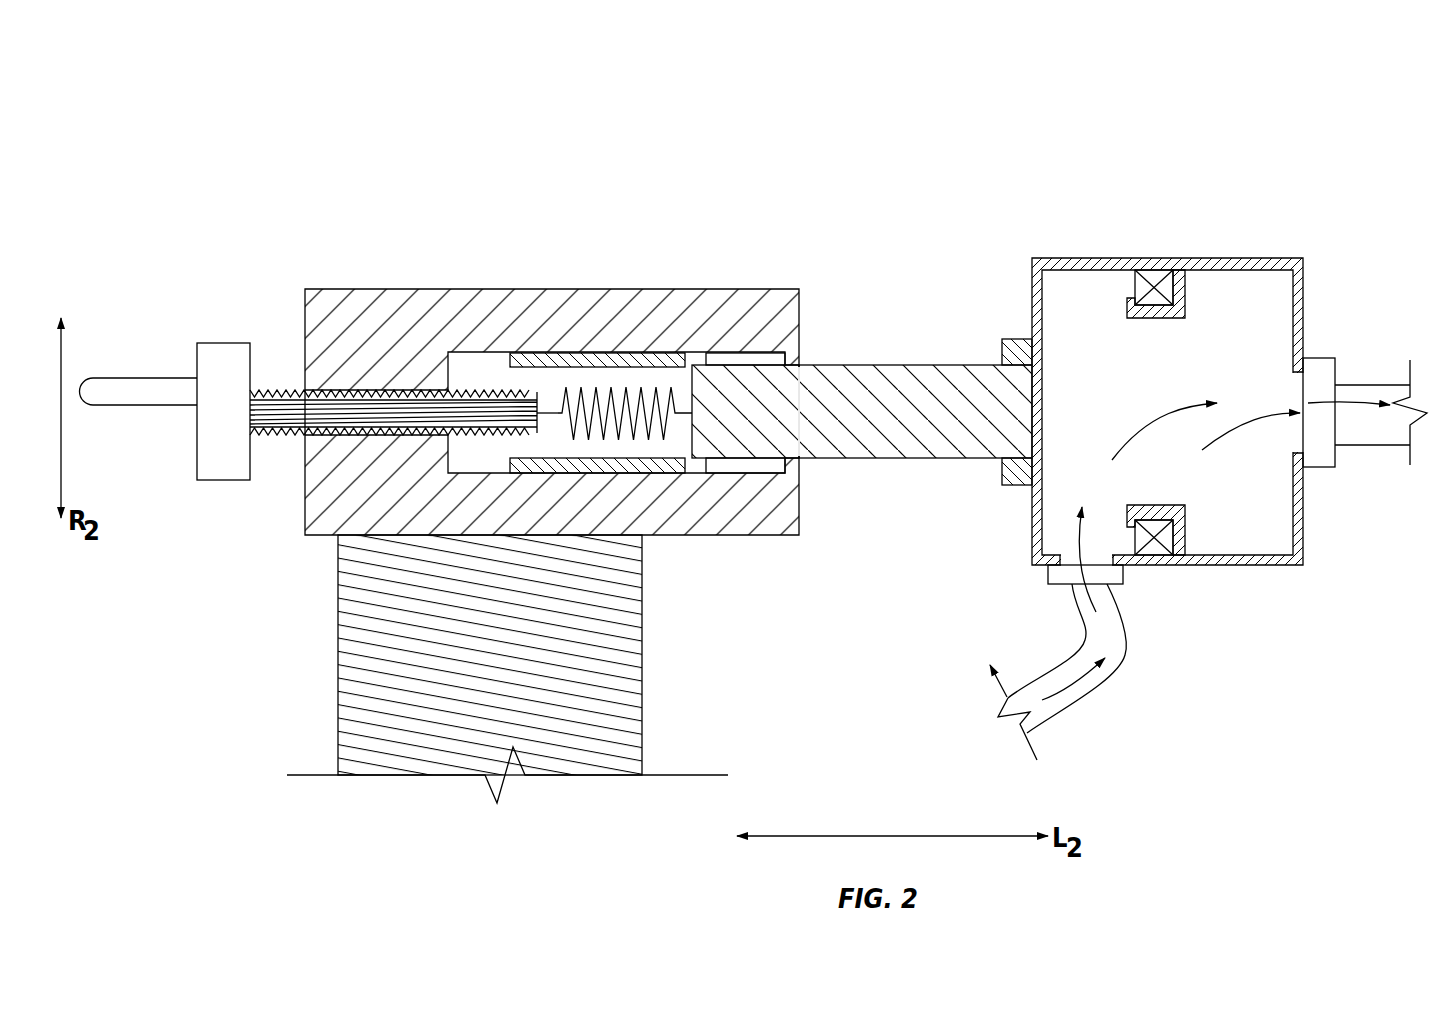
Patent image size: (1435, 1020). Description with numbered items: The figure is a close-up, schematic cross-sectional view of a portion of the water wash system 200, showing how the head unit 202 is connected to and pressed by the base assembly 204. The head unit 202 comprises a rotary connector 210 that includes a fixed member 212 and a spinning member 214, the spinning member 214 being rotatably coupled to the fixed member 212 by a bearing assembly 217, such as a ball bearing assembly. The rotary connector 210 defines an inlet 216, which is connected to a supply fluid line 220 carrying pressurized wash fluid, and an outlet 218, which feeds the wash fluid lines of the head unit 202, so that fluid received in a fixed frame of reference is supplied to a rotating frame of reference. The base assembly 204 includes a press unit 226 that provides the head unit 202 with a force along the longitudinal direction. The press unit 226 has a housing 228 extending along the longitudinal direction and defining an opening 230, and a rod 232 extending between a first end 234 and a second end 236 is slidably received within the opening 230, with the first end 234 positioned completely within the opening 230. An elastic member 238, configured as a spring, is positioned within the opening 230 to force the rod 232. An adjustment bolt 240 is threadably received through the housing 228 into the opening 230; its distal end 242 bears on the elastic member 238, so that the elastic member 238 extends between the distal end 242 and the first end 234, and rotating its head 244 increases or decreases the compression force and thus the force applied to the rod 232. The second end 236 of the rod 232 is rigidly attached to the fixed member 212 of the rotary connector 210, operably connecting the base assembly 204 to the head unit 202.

The water wash system 200 is at (965, 75).
The head unit 202 is at (1262, 165).
The base assembly 204 is at (540, 160).
The rotary connector 210 is at (1152, 200).
The fixed member 212 is at (1070, 258).
The spinning member 214 is at (1268, 258).
The inlet 216 is at (1070, 597).
The bearing assembly 217 is at (1160, 268).
The outlet 218 is at (1312, 393).
The supply fluid line 220 is at (1072, 705).
The press unit 226 is at (310, 205).
The housing 228 is at (477, 298).
The opening 230 is at (572, 363).
The rod 232 is at (898, 460).
The first end 234 is at (718, 445).
The second end 236 is at (1000, 445).
The elastic member 238 is at (637, 395).
The adjustment bolt 240 is at (358, 415).
The distal end 242 is at (518, 420).
The head 244 is at (222, 482).